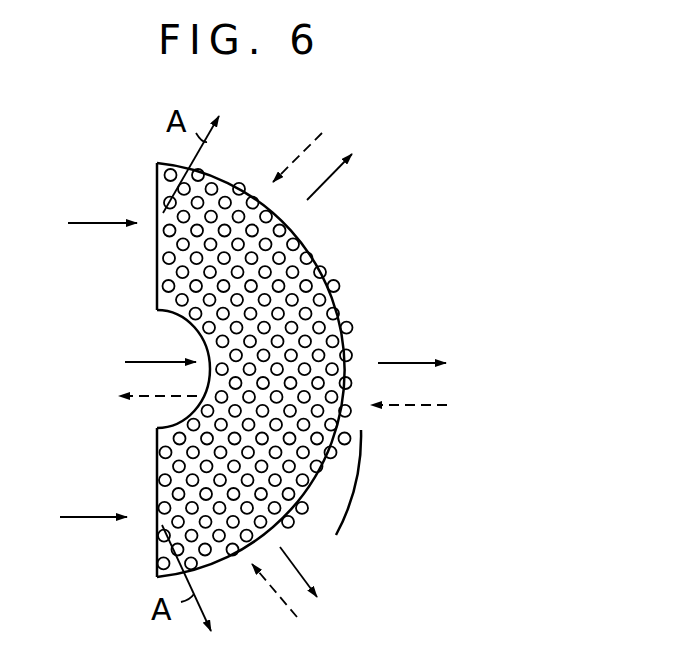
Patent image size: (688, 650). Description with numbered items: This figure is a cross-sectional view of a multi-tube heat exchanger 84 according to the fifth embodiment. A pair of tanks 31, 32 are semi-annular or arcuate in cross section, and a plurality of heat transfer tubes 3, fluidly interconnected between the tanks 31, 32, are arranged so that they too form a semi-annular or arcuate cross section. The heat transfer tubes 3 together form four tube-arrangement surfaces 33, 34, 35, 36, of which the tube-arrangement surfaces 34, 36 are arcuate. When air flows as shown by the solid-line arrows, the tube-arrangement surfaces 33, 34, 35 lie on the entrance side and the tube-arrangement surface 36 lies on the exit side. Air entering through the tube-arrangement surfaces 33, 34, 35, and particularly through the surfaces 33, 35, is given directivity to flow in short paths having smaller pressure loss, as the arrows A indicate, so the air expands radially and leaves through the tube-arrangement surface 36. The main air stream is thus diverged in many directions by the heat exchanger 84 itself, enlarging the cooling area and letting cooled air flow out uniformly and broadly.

The heat transfer tubes 3 is at (246, 354).
The tank 31 is at (294, 370).
The tank 32 is at (313, 242).
The tube-arrangement surface 33 is at (150, 191).
The tube-arrangement surface 34 is at (182, 332).
The tube-arrangement surface 35 is at (146, 543).
The tube-arrangement surface 36 is at (337, 488).
The multi-tube heat exchanger 84 is at (374, 315).